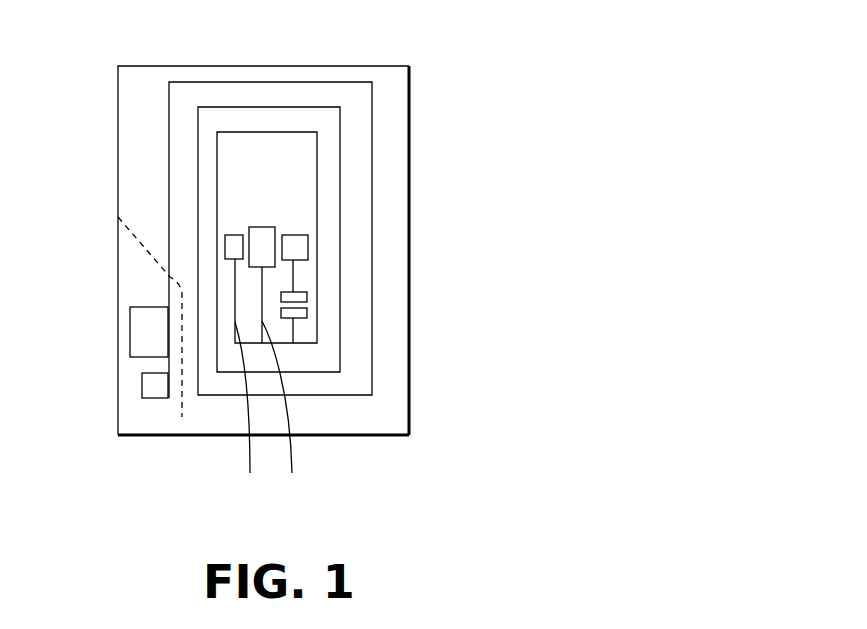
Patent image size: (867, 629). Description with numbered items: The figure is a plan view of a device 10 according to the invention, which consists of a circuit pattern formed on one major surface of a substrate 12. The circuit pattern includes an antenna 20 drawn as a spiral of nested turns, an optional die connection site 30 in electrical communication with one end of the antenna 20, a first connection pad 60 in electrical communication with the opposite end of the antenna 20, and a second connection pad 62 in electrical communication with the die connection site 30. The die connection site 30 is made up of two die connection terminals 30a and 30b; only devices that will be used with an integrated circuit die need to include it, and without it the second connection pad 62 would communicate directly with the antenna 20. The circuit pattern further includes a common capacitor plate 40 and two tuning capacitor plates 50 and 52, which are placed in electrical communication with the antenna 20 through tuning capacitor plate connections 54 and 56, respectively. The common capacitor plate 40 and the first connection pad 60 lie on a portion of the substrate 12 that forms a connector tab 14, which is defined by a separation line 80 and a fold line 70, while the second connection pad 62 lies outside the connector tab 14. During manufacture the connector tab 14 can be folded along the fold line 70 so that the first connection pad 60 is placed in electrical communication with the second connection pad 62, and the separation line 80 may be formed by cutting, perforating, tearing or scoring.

The device 10 is at (436, 70).
The substrate 12 is at (395, 138).
The connector tab 14 is at (133, 417).
The antenna 20 is at (167, 137).
The die connection site 30 is at (390, 326).
The die connection terminal 30a is at (303, 291).
The die connection terminal 30b is at (303, 319).
The common capacitor plate 40 is at (130, 328).
The tuning capacitor plate 50 is at (242, 235).
The tuning capacitor plate 52 is at (262, 227).
The tuning capacitor plate connection 54 is at (247, 415).
The tuning capacitor plate connection 56 is at (285, 414).
The first connection pad 60 is at (142, 387).
The second connection pad 62 is at (308, 242).
The fold line 70 is at (143, 247).
The separation line 80 is at (182, 415).